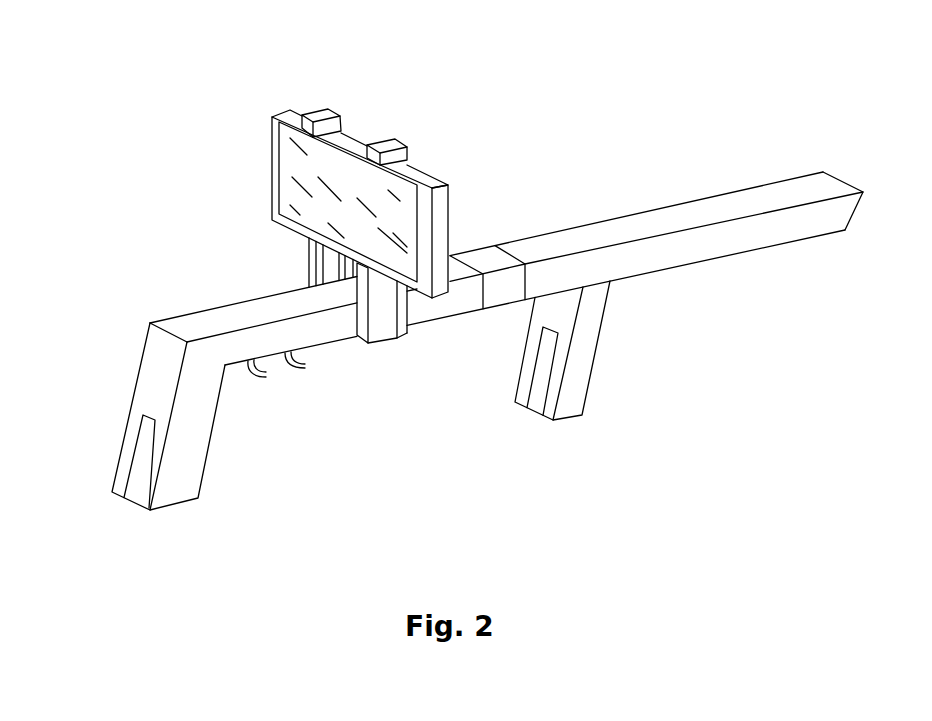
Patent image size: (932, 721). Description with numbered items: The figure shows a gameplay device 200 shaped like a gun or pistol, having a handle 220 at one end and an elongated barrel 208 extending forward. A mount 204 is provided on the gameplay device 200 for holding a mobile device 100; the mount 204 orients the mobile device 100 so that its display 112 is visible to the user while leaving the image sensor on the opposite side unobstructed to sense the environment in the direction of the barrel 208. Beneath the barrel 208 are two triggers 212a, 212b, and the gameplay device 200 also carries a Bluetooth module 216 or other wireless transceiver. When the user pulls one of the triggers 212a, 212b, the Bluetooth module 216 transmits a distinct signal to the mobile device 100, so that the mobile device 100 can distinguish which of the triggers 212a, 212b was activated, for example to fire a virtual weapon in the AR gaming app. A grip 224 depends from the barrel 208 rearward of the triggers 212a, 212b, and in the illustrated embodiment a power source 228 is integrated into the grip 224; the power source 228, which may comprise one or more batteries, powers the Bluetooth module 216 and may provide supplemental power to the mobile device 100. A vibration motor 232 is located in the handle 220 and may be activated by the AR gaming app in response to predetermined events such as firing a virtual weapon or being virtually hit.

The mobile device 100 is at (450, 217).
The display 112 is at (290, 157).
The gameplay device 200 is at (546, 106).
The mount 204 is at (333, 118).
The barrel 208 is at (820, 226).
The trigger 212a is at (265, 377).
The trigger 212b is at (303, 362).
The Bluetooth module 216 is at (507, 297).
The handle 220 is at (150, 382).
The grip 224 is at (585, 367).
The power source 228 is at (537, 392).
The vibration motor 232 is at (140, 462).